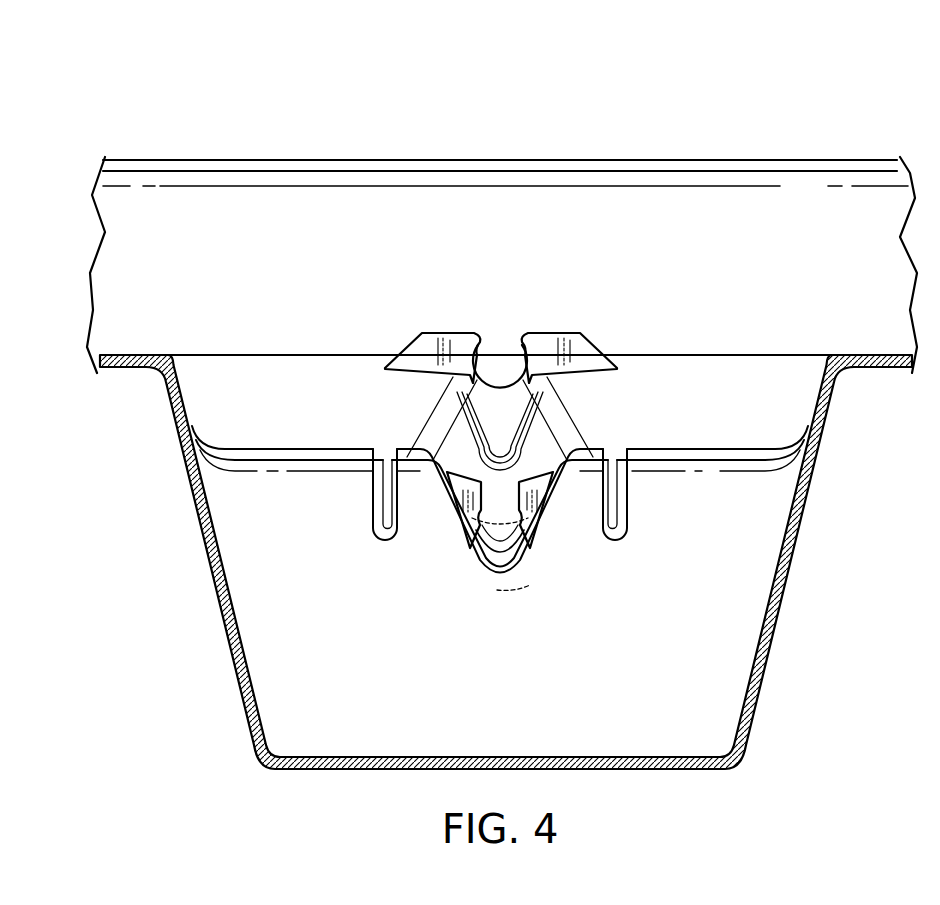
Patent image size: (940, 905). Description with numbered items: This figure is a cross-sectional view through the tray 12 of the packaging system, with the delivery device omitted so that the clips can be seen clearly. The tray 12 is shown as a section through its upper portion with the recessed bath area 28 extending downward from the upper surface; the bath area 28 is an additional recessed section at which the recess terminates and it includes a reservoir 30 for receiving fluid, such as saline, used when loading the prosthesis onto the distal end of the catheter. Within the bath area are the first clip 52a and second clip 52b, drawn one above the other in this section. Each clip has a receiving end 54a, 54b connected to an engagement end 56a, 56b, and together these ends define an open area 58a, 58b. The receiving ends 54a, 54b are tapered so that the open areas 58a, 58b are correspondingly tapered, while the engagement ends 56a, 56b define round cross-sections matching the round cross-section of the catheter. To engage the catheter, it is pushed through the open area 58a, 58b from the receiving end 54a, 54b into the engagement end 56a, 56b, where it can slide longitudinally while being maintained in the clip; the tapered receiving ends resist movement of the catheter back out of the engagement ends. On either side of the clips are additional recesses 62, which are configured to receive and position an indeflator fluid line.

The tray 12 is at (880, 145).
The bath area 28 is at (750, 611).
The reservoir 30 is at (640, 756).
The additional recess 62 is at (373, 492).
The first clip 52a is at (546, 508).
The second clip 52b is at (581, 333).
The receiving end 54a is at (455, 508).
The receiving end 54b is at (471, 338).
The engagement end 56a is at (492, 571).
The engagement end 56b is at (515, 397).
The open area 58a is at (496, 527).
The open area 58b is at (504, 336).